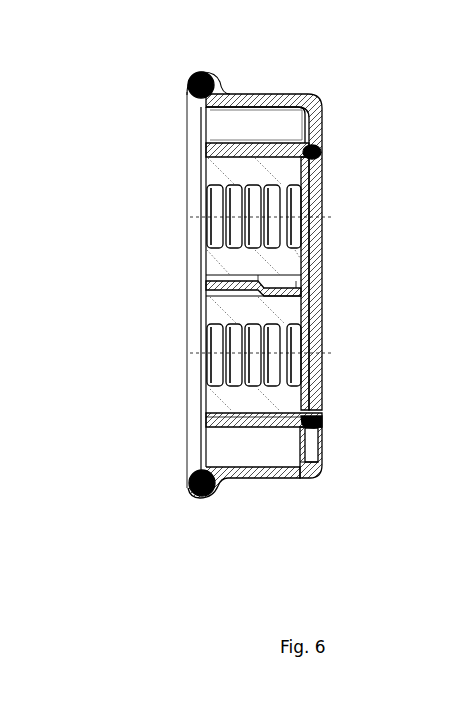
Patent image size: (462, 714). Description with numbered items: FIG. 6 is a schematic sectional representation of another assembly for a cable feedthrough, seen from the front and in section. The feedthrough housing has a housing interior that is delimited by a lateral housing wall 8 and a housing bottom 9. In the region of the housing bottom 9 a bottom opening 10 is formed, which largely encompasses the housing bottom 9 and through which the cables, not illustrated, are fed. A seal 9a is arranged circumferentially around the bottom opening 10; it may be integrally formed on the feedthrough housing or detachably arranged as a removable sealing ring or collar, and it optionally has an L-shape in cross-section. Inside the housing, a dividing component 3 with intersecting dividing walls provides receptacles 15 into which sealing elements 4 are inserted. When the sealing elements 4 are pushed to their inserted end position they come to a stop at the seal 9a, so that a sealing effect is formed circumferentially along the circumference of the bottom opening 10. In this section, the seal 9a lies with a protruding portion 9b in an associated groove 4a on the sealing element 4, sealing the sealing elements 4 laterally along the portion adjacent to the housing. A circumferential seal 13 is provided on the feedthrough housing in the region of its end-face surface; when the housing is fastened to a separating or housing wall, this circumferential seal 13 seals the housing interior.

The dividing component 3 is at (230, 290).
The sealing elements 4 is at (218, 392).
The groove 4a is at (312, 410).
The lateral housing wall 8 is at (260, 478).
The housing bottom 9 is at (322, 440).
The seal 9a is at (322, 410).
The protruding portion 9b is at (300, 478).
The bottom opening 10 is at (313, 310).
The circumferential seal 13 is at (193, 481).
The receptacles 15 is at (231, 150).